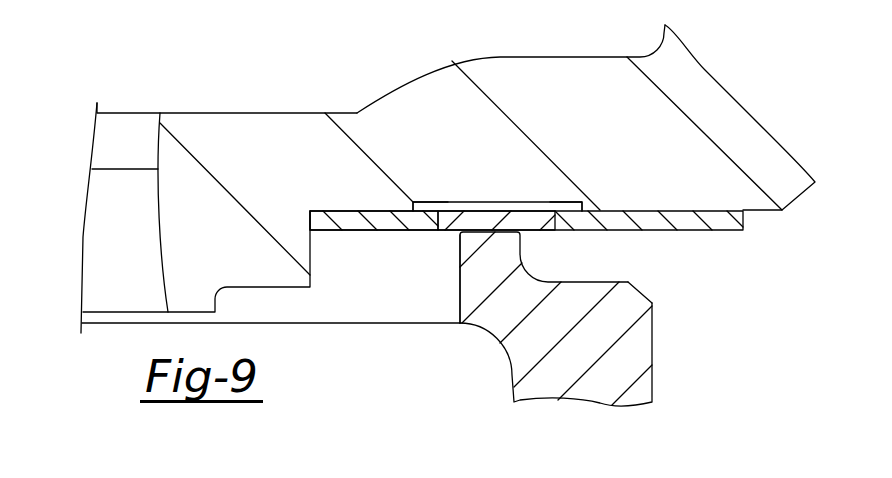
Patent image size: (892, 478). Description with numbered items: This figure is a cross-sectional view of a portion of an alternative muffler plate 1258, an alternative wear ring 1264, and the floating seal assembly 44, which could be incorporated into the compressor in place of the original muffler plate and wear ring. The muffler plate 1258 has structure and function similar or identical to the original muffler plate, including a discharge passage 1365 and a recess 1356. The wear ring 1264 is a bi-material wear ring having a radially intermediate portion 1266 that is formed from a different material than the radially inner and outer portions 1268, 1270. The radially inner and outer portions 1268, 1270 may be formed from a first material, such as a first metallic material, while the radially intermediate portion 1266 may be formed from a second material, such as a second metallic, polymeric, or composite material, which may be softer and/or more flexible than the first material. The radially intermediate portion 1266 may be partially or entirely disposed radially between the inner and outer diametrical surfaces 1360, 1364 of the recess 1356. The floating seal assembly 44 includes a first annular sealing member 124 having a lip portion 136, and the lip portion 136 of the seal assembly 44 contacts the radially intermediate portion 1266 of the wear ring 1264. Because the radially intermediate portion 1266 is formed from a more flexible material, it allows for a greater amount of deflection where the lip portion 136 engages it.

The muffler plate 1258 is at (240, 182).
The discharge passage 1365 is at (157, 152).
The radially inner portion 1268 is at (373, 213).
The inner diametrical surface 1360 is at (428, 208).
The recess 1356 is at (523, 208).
The outer diametrical surface 1364 is at (578, 209).
The radially outer portion 1270 is at (683, 221).
The radially intermediate portion 1266 is at (483, 214).
The wear ring 1264 is at (568, 161).
The floating seal assembly 44 is at (659, 284).
The first annular sealing member 124 is at (558, 319).
The lip portion 136 is at (457, 264).